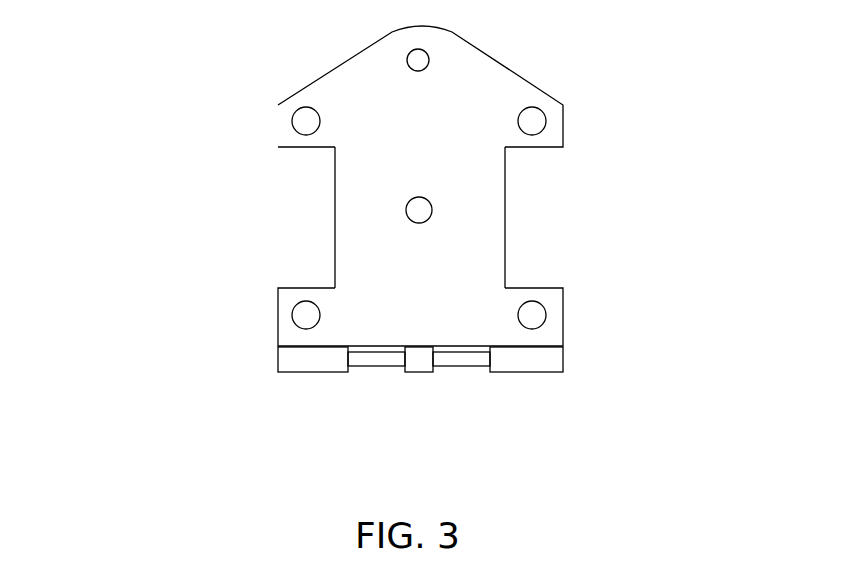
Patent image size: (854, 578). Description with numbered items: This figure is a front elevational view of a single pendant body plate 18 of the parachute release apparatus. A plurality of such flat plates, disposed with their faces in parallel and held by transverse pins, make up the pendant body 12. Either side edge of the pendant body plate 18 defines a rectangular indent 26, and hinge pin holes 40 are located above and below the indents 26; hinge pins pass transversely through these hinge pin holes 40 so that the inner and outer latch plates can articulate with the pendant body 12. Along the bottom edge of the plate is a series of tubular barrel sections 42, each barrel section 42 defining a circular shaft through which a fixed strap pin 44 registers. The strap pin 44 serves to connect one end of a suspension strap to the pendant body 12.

The pendant body 12 is at (430, 60).
The pendant body plate 18 is at (403, 265).
The rectangular indent 26 is at (334, 200).
The hinge pin hole 40 is at (307, 120).
The tubular barrel section 42 is at (420, 359).
The strap pin 44 is at (465, 360).